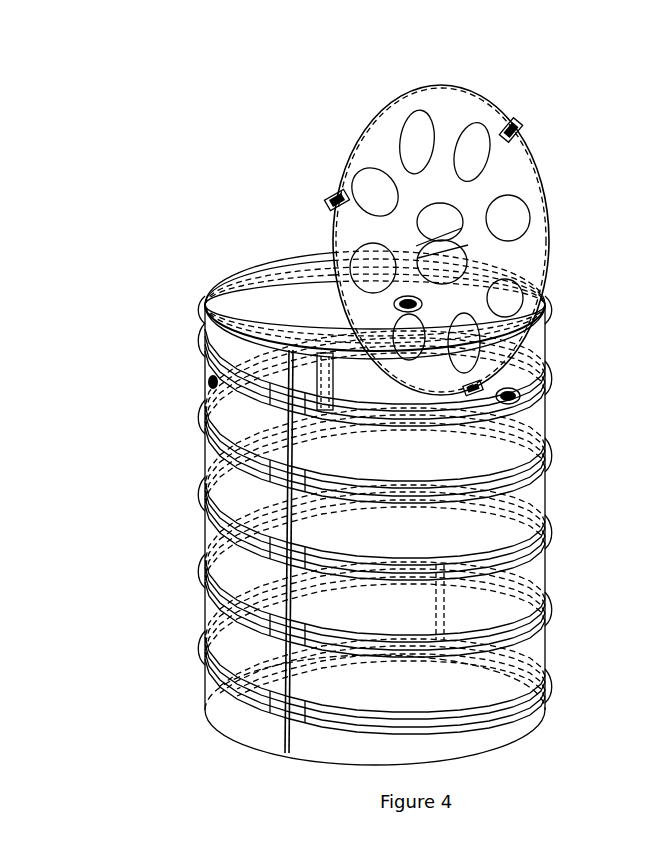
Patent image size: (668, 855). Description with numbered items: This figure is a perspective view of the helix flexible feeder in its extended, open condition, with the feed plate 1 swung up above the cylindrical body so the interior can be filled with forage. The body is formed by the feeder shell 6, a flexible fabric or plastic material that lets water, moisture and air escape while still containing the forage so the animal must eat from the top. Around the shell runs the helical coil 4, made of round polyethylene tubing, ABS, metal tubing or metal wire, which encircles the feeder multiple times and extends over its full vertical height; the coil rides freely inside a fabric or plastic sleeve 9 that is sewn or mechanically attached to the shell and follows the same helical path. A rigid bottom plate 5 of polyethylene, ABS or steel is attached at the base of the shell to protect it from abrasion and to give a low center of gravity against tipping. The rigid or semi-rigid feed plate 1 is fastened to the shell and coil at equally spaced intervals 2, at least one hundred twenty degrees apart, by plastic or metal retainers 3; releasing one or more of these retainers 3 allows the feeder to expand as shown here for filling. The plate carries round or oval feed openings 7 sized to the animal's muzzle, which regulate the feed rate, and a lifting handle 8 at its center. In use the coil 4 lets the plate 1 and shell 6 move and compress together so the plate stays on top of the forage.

The feed plate 1 is at (391, 225).
The equally spaced intervals 2 is at (400, 300).
The retainers 3 is at (324, 192).
The helical coil 4 is at (280, 540).
The bottom plate 5 is at (262, 752).
The feeder shell 6 is at (220, 636).
The feed openings 7 is at (400, 122).
The lifting handle 8 is at (452, 222).
The sleeve 9 is at (232, 694).